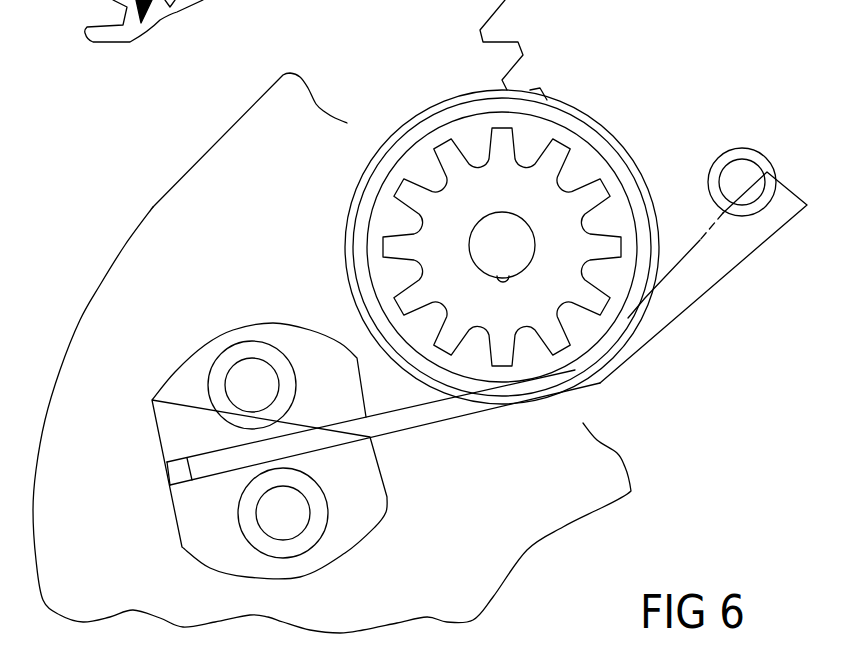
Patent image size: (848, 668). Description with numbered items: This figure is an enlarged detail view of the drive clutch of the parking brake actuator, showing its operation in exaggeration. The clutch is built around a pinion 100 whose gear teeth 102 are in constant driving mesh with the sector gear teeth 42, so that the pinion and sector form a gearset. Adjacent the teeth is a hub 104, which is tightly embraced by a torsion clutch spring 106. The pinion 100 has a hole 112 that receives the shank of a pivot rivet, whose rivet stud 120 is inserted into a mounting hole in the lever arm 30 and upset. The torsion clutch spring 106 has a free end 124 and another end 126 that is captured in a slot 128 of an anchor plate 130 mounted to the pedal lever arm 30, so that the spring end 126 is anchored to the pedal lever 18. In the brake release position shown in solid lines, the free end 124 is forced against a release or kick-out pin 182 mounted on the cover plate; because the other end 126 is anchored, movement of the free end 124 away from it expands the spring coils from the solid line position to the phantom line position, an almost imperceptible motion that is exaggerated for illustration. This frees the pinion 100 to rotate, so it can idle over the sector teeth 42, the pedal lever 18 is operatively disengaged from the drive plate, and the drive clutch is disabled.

The pedal lever 18 is at (152, 207).
The lever arm 30 is at (95, 317).
The sector gear teeth 42 is at (507, 62).
The pinion 100 is at (526, 265).
The gear teeth 102 is at (573, 160).
The hub 104 is at (613, 317).
The torsion clutch spring 106 is at (432, 114).
The hole 112 is at (500, 274).
The rivet stud 120 is at (500, 225).
The free end 124 is at (725, 253).
The spring end 126 is at (200, 460).
The slot 128 is at (170, 470).
The anchor plate 130 is at (203, 347).
The kick-out pin 182 is at (747, 147).